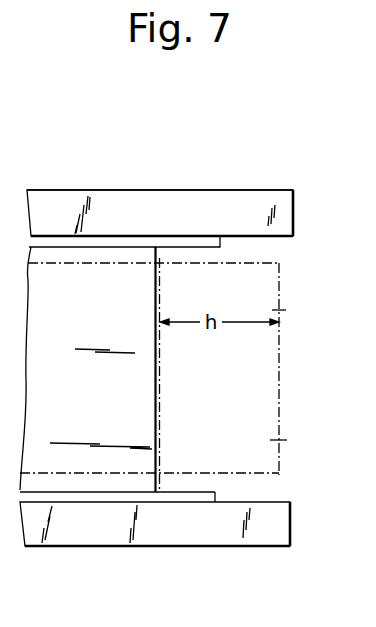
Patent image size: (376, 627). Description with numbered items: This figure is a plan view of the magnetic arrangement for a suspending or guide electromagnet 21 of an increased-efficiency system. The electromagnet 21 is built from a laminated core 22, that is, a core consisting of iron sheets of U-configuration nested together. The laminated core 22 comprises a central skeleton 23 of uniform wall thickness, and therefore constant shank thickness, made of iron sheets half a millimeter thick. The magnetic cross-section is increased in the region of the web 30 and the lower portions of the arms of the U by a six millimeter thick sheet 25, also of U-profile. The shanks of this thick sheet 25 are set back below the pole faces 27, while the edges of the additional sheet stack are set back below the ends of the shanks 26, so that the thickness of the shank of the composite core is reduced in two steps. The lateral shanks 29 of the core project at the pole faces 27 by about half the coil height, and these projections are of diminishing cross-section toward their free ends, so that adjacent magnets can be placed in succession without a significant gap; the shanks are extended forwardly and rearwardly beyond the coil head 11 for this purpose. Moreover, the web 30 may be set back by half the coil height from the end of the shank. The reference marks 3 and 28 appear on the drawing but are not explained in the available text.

The beam axis 3 is at (286, 440).
The coil head 11 is at (287, 311).
The suspending or guide electromagnet 21 is at (192, 190).
The laminated core 22 is at (132, 190).
The central skeleton 23 is at (55, 205).
The thick sheet 25 is at (133, 258).
The shank ends 26 is at (205, 248).
The pole faces 27 is at (232, 200).
The lower reinforcing plate 28 is at (175, 496).
The lateral shanks 29 is at (284, 190).
The web 30 is at (107, 466).